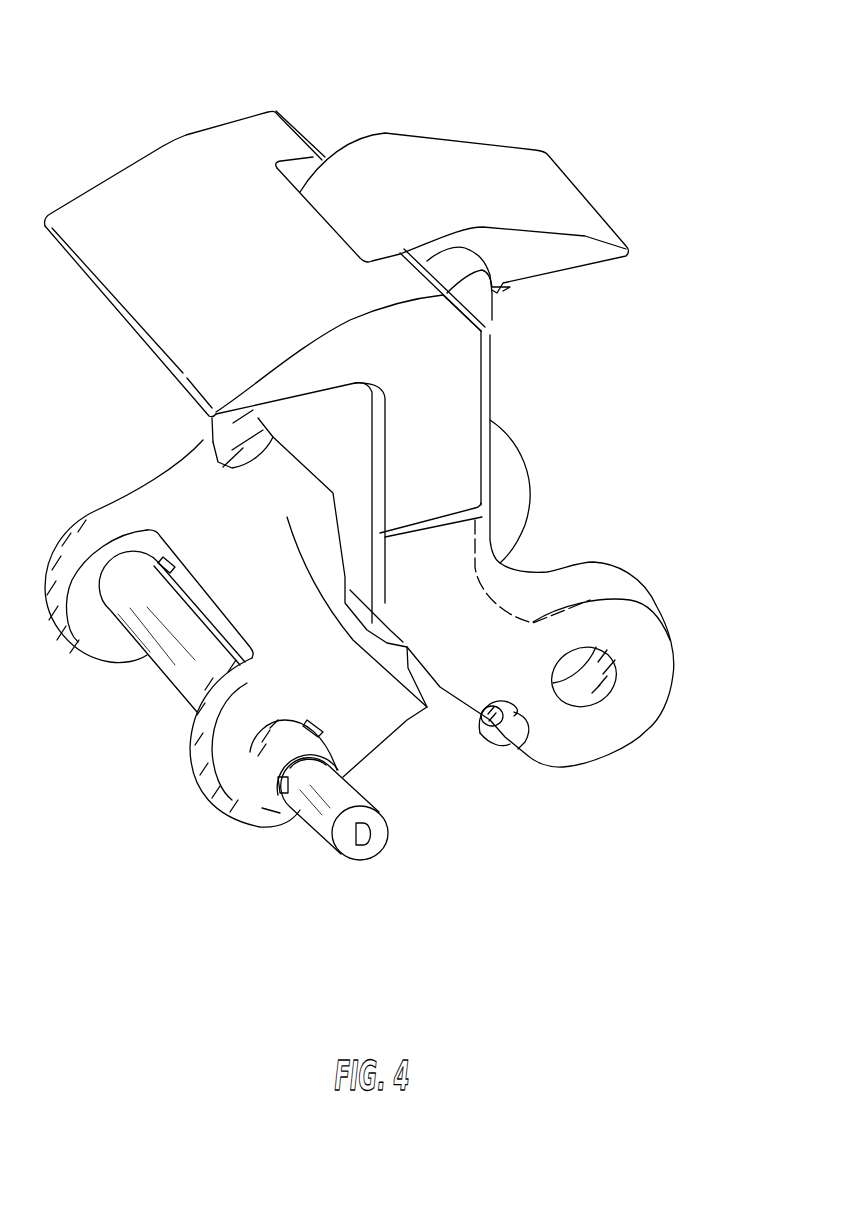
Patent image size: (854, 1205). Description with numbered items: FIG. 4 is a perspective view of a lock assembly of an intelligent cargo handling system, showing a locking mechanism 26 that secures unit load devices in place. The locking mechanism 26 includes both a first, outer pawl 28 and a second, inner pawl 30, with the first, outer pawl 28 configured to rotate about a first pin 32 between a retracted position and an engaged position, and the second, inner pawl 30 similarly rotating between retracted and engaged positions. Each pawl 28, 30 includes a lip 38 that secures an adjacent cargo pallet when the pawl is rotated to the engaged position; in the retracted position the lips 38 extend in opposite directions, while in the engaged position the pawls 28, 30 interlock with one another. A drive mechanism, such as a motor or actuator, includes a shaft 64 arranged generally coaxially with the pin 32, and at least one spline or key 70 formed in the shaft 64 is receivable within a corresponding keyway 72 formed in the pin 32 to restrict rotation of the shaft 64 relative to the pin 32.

The locking mechanism 26 is at (669, 95).
The first, outer pawl 28 is at (463, 418).
The second, inner pawl 30 is at (410, 717).
The first pin 32 is at (177, 650).
The lip 38 is at (585, 269).
The shaft 64 is at (330, 813).
The spline or key 70 is at (287, 792).
The keyway 72 is at (273, 795).